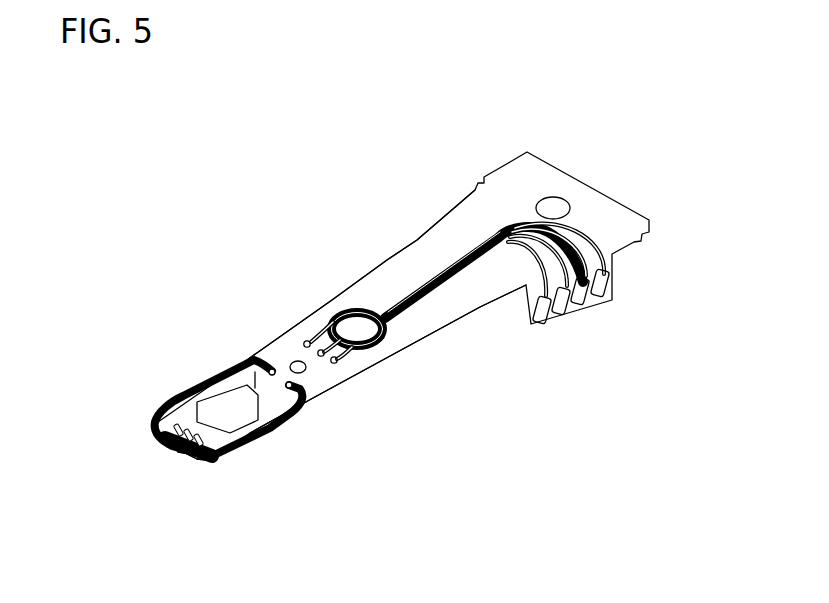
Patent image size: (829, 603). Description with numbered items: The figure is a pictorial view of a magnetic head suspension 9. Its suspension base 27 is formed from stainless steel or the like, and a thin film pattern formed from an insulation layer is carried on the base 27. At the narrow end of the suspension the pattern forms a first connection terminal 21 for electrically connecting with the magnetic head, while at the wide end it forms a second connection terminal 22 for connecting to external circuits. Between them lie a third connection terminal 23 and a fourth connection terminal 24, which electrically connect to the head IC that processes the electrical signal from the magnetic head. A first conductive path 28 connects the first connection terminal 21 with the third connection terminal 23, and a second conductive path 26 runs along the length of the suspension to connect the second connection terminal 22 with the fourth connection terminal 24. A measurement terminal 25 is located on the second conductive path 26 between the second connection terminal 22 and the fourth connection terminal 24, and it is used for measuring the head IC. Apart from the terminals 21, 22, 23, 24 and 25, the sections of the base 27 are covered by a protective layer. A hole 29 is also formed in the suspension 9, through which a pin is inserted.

The magnetic head suspension 9 is at (197, 211).
The first connection terminal 21 is at (223, 450).
The second connection terminal 22 is at (537, 313).
The third connection terminal 23 is at (248, 360).
The fourth connection terminal 24 is at (303, 343).
The measurement terminal 25 is at (505, 237).
The second conductive path 26 is at (413, 303).
The suspension base 27 is at (385, 276).
The first conductive path 28 is at (268, 433).
The hole 29 is at (552, 210).